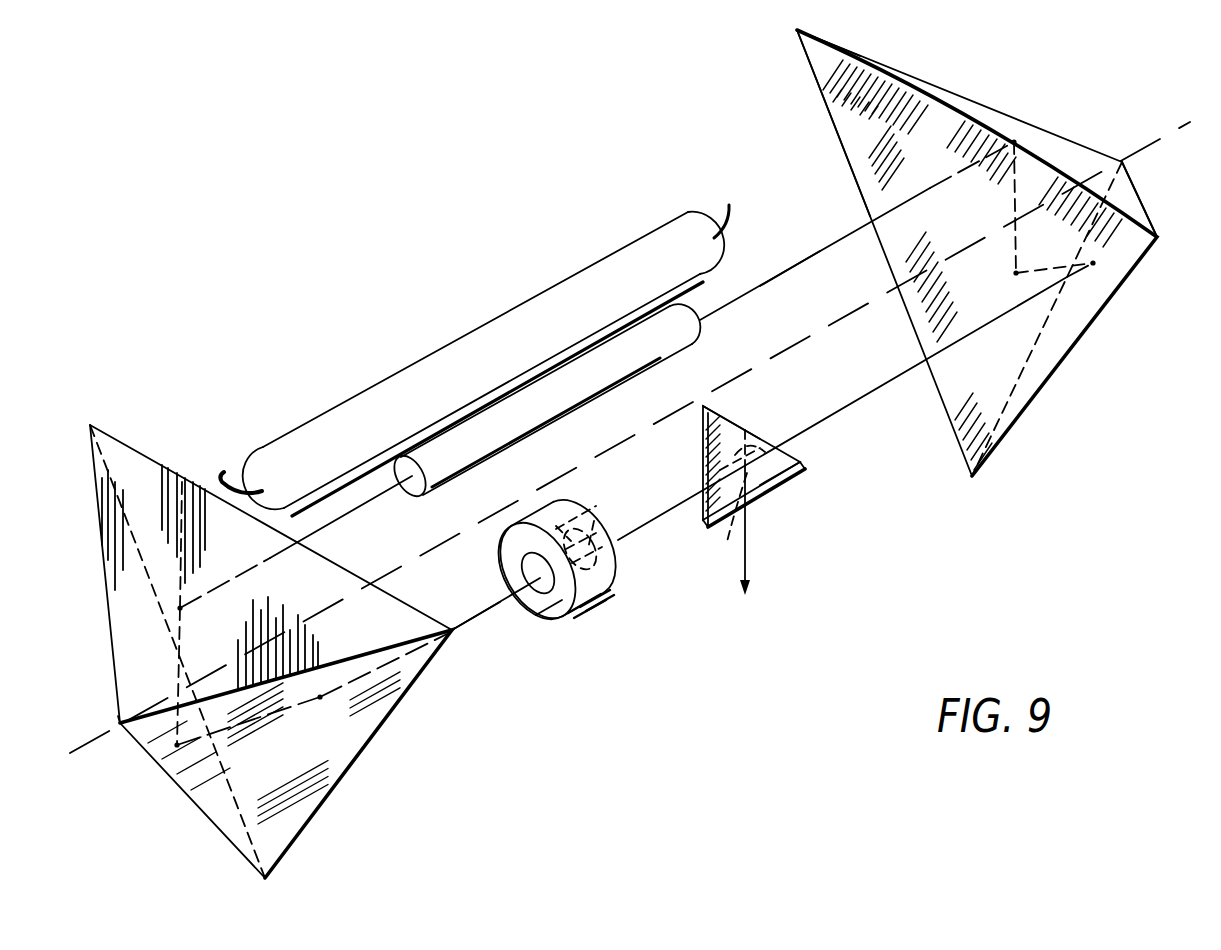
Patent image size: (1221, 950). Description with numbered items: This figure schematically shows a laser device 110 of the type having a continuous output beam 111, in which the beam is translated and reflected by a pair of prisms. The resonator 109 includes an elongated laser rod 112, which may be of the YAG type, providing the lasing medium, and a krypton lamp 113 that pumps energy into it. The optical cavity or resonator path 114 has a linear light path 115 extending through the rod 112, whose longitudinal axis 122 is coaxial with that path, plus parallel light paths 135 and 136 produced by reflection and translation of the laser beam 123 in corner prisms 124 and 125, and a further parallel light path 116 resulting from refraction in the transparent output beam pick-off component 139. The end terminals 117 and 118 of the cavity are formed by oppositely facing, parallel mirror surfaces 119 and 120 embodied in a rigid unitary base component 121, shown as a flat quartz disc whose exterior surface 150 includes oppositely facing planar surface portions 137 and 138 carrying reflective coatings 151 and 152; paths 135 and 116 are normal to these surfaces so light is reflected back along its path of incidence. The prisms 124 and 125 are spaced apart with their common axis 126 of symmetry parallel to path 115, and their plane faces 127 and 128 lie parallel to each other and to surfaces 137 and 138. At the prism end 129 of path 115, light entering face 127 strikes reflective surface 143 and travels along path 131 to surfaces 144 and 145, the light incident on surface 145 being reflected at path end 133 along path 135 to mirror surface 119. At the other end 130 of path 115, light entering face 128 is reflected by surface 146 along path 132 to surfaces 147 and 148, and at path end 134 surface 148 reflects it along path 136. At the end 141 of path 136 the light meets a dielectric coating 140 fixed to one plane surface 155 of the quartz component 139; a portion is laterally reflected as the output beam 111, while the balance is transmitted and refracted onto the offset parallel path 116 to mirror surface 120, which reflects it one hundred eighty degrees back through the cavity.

The resonator 109 is at (876, 58).
The laser device 110 is at (515, 206).
The output beam 111 is at (750, 578).
The laser rod 112 is at (700, 334).
The krypton lamp 113 is at (654, 224).
The resonator path 114 is at (790, 266).
The linear light path 115 is at (848, 230).
The linear light path 116 is at (646, 520).
The end terminal 117 is at (538, 615).
The end terminal 118 is at (605, 520).
The mirror surface 119 is at (527, 572).
The mirror surface 120 is at (622, 535).
The base component 121 is at (622, 586).
The longitudinal axis 122 is at (381, 498).
The laser beam 123 is at (340, 520).
The corner prism 124 is at (96, 426).
The corner prism 125 is at (798, 78).
The axis of symmetry 126 is at (420, 554).
The plane facial surface portion 127 is at (150, 472).
The plane facial surface portion 128 is at (860, 150).
The prism end of path 115 129 is at (180, 608).
The other end of path 115 130 is at (1014, 142).
The path 131 is at (177, 745).
The path 132 is at (1017, 196).
The path end 133 is at (320, 700).
The path end 134 is at (1093, 263).
The light path 135 is at (470, 614).
The light path 136 is at (856, 396).
The planar surface portion 137 is at (507, 560).
The planar surface portion 138 is at (592, 498).
The output beam pick-off component 139 is at (728, 418).
The dielectric coating 140 is at (755, 440).
The end of path 136 141 is at (772, 490).
The reflective surface 143 is at (213, 606).
The reflective surface 144 is at (150, 748).
The reflective surface 145 is at (400, 658).
The reflective surface 146 is at (926, 114).
The reflective surface 147 is at (992, 236).
The reflective surface 148 is at (1138, 272).
The exterior surface 150 is at (600, 618).
The coating 151 is at (566, 618).
The coating 152 is at (618, 568).
The plane surface 155 is at (724, 517).